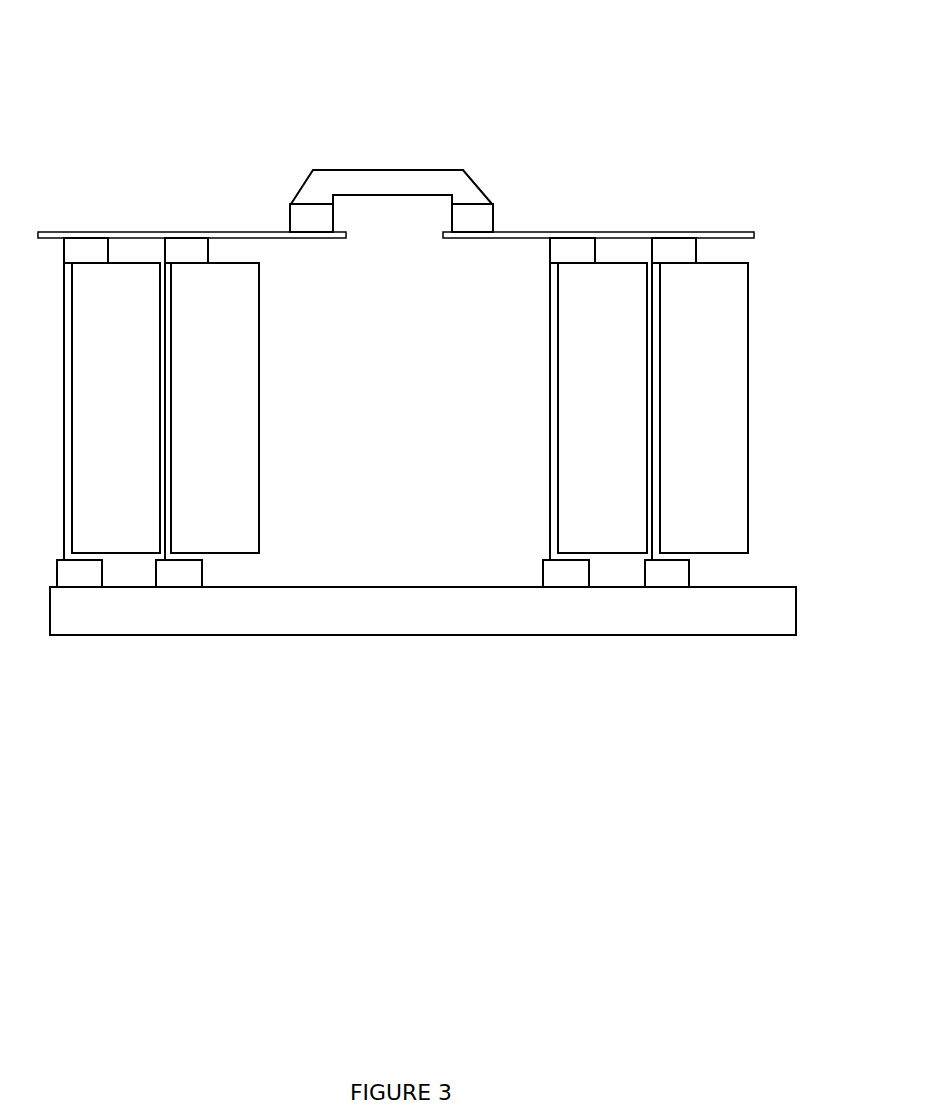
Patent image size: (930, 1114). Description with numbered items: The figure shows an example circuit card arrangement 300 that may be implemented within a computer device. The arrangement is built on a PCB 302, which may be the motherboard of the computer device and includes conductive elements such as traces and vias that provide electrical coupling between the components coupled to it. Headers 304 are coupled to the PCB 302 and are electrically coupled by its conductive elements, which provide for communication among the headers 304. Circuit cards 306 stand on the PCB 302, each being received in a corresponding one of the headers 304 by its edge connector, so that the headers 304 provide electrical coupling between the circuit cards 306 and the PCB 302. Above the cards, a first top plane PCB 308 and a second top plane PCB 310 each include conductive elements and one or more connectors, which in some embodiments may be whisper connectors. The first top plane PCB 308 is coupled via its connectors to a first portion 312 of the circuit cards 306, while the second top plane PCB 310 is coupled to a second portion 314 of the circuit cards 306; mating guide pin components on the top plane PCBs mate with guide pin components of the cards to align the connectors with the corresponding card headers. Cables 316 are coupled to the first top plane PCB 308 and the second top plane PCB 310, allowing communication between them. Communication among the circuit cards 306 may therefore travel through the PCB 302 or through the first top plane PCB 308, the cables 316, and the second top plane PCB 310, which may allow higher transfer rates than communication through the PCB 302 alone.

The circuit card arrangement 300 is at (78, 98).
The PCB 302 is at (361, 612).
The headers 304 is at (172, 573).
The circuit cards 306 is at (763, 315).
The first top plane PCB 308 is at (142, 235).
The second top plane PCB 310 is at (635, 232).
The first portion of the circuit cards 312 is at (274, 415).
The second portion of the circuit cards 314 is at (533, 441).
The cables 316 is at (403, 181).